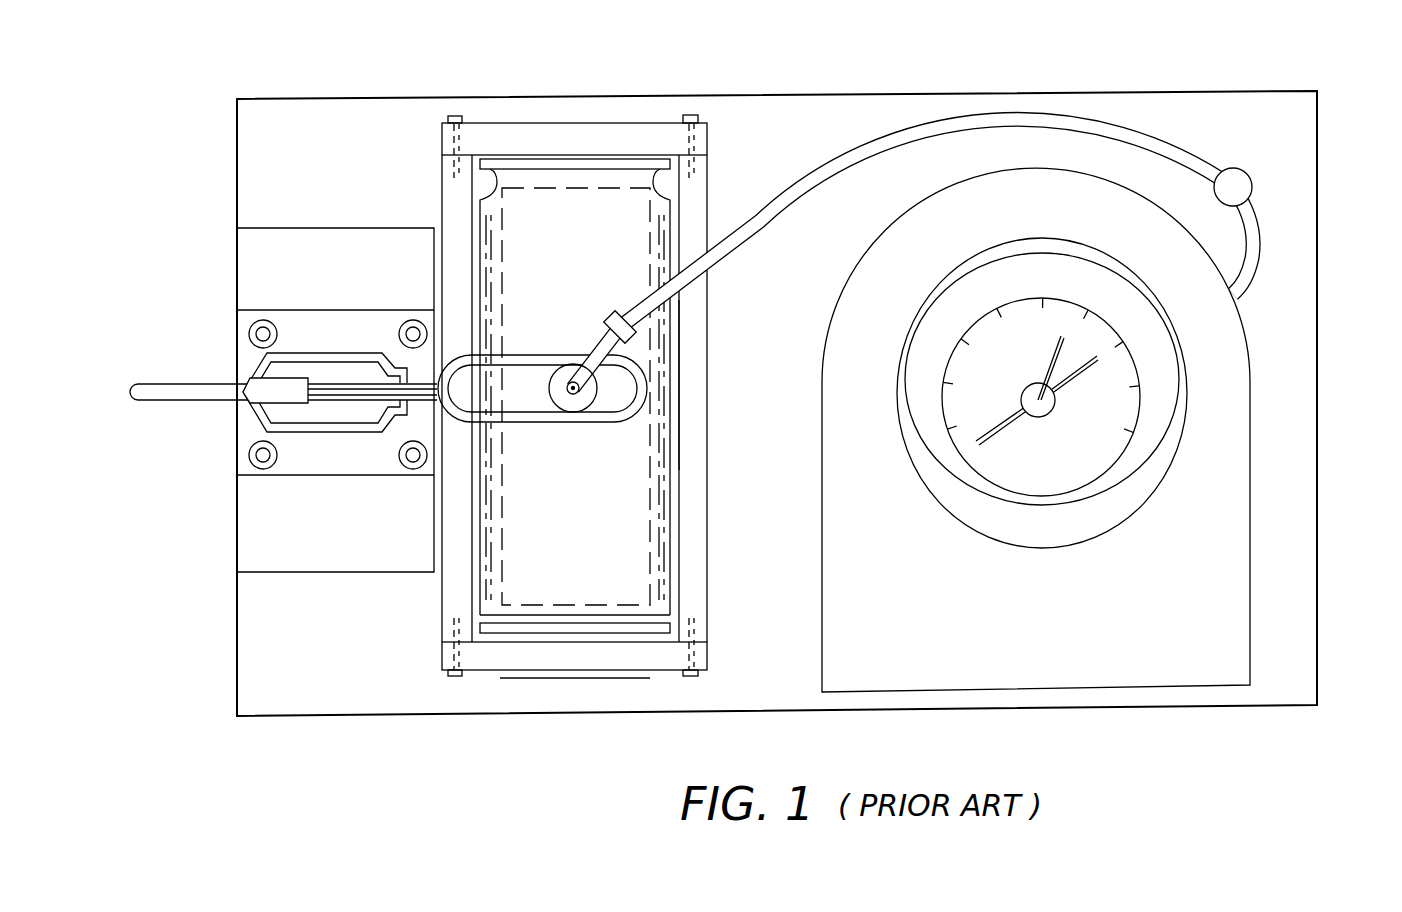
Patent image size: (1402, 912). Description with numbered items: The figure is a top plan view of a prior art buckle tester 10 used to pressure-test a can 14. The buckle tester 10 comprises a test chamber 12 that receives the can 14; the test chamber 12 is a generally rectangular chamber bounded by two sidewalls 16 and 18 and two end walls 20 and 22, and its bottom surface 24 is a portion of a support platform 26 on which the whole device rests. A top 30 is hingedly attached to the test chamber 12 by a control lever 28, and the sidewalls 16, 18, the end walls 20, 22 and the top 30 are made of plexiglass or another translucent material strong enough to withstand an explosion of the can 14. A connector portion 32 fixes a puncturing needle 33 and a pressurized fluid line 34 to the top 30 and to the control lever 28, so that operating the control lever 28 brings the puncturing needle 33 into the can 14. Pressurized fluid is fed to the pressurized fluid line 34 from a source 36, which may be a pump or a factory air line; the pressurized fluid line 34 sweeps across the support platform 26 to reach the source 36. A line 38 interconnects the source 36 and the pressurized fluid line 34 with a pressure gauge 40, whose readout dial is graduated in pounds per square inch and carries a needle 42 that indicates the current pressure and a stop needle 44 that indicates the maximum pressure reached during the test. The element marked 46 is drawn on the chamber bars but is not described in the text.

The buckle tester 10 is at (222, 542).
The test chamber 12 is at (677, 458).
The can 14 is at (662, 512).
The sidewall 16 is at (441, 622).
The sidewall 18 is at (706, 580).
The end wall 20 is at (640, 121).
The end wall 22 is at (673, 672).
The bottom surface 24 is at (670, 180).
The support platform 26 is at (1300, 154).
The control lever 28 is at (180, 383).
The top 30 is at (675, 548).
The connector portion 32 is at (524, 357).
The puncturing needle 33 is at (573, 404).
The pressurized fluid line 34 is at (870, 165).
The source 36 is at (1258, 149).
The line 38 is at (1243, 278).
The pressure gauge 40 is at (1124, 500).
The needle 42 is at (1000, 432).
The stop needle 44 is at (1058, 340).
The end bars 46 is at (660, 152).